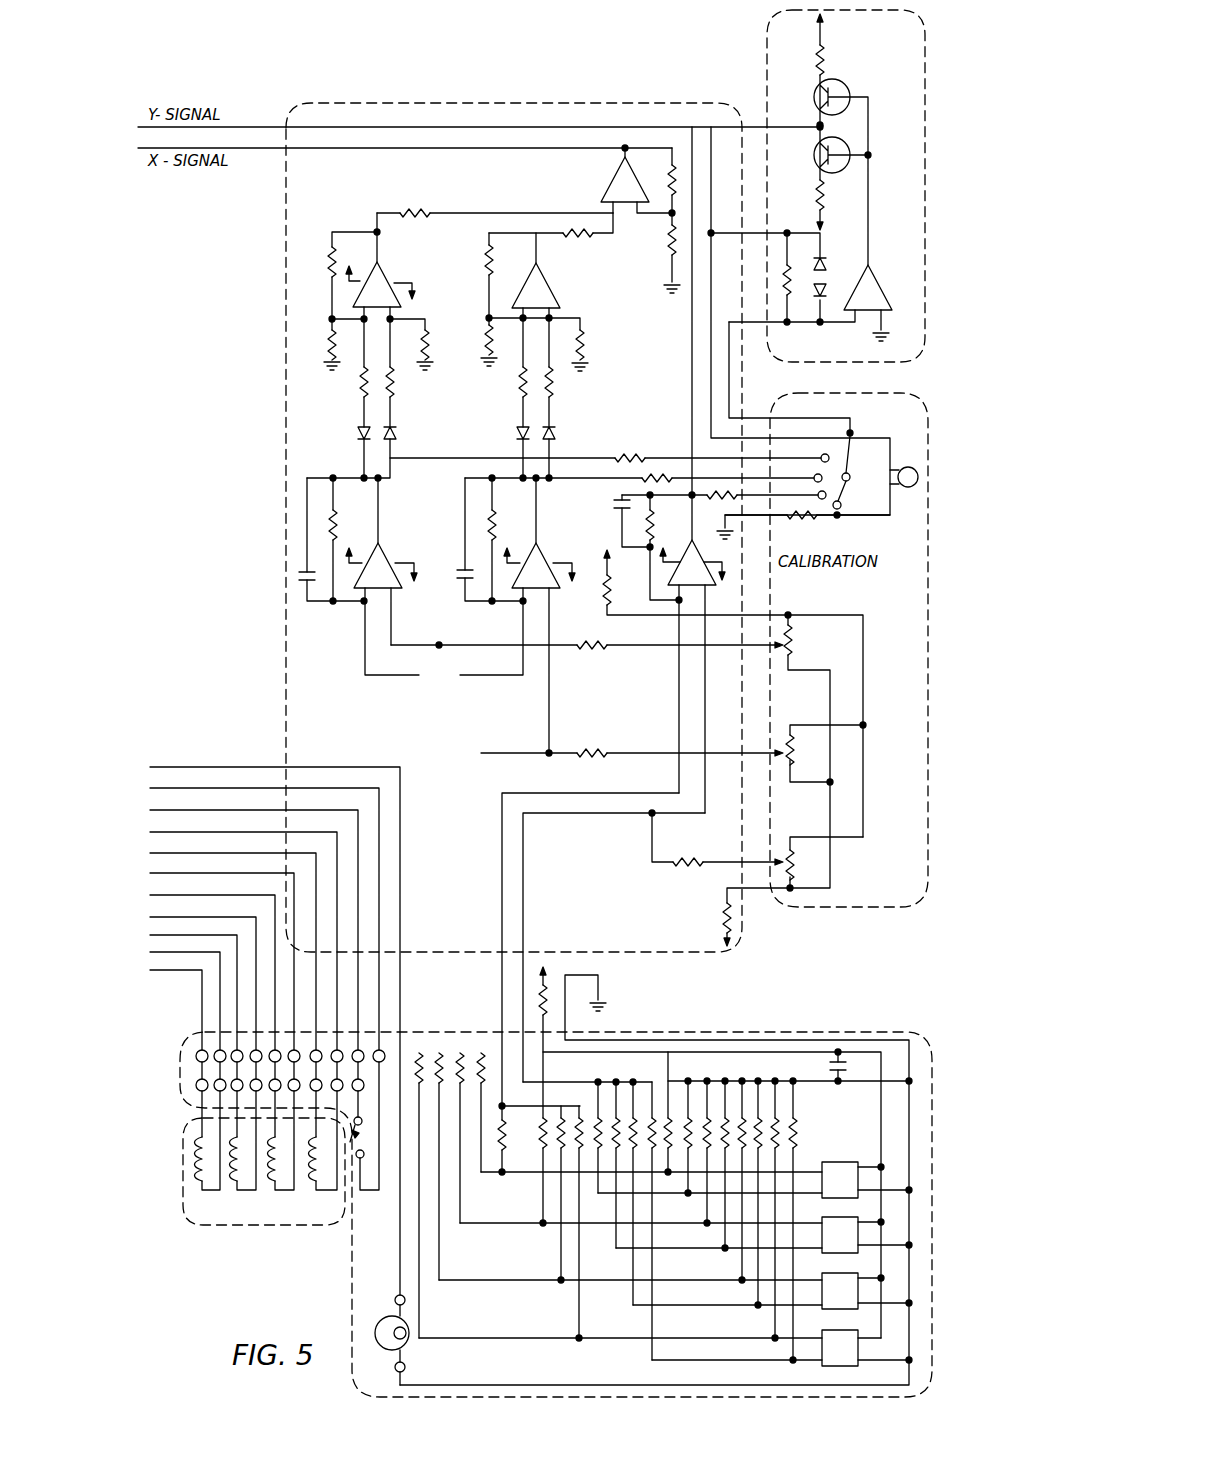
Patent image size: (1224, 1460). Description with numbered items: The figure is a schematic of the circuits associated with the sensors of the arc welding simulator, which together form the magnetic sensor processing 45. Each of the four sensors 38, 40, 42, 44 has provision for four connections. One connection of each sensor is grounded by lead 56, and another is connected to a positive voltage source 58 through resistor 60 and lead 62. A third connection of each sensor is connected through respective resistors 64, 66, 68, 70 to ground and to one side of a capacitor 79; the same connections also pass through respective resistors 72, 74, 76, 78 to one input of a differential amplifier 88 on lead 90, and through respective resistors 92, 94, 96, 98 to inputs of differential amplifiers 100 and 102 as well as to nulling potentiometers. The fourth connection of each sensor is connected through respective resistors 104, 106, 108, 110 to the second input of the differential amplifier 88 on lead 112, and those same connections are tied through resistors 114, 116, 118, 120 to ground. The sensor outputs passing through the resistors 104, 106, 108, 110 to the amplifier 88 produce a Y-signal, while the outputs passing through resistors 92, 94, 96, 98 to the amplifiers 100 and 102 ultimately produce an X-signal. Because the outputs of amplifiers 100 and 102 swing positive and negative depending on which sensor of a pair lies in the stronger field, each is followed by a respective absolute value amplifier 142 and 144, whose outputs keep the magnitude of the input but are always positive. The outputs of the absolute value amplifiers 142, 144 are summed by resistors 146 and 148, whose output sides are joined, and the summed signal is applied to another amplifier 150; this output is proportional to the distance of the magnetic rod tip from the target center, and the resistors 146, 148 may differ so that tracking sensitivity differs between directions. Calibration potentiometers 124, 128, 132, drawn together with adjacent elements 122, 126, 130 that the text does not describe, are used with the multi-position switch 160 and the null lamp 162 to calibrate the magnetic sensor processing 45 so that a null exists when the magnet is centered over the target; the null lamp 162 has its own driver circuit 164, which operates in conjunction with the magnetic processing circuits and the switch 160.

The magnetic sensor processing 45 is at (514, 505).
The resistor 148 is at (492, 196).
The absolute value amplifier 144 is at (379, 345).
The amplifier 150 is at (620, 220).
The resistor 146 is at (552, 238).
The absolute value amplifier 142 is at (546, 355).
The driver circuit 164 is at (811, 186).
The null lamp 162 is at (897, 450).
The multi-position switch 160 is at (853, 492).
The differential amplifier 88 is at (669, 652).
The differential amplifier 102 is at (371, 575).
The differential amplifier 100 is at (523, 615).
The potentiometer wiper 130 is at (605, 673).
The calibration potentiometer 132 is at (833, 683).
The potentiometer wiper 126 is at (650, 783).
The calibration potentiometer 128 is at (845, 755).
The potentiometer wiper 122 is at (734, 876).
The calibration potentiometer 124 is at (808, 864).
The lead 90 is at (590, 934).
The lead 112 is at (614, 947).
The positive voltage source 58 is at (554, 1009).
The resistor 60 is at (654, 1156).
The lead 56 is at (572, 1214).
The resistor 98 is at (410, 1195).
The resistor 96 is at (433, 1166).
The resistor 94 is at (455, 1138).
The resistor 92 is at (476, 1112).
The resistor 72 is at (488, 1152).
The resistor 74 is at (516, 1185).
The resistor 76 is at (536, 1180).
The resistor 78 is at (575, 1209).
The resistor 106 is at (578, 1127).
The resistor 110 is at (633, 1154).
The resistor 104 is at (611, 1193).
The resistor 108 is at (633, 1186).
The resistor 114 is at (681, 1092).
The resistor 64 is at (674, 1151).
The resistor 66 is at (701, 1139).
The resistor 116 is at (734, 1130).
The resistor 68 is at (749, 1167).
The resistor 118 is at (783, 1159).
The resistor 70 is at (797, 1196).
The resistor 120 is at (817, 1220).
The capacitor 79 is at (859, 1065).
The lead 62 is at (875, 1245).
The sensor 40 is at (830, 1169).
The sensor 44 is at (829, 1224).
The sensor 42 is at (829, 1281).
The sensor 38 is at (861, 1348).